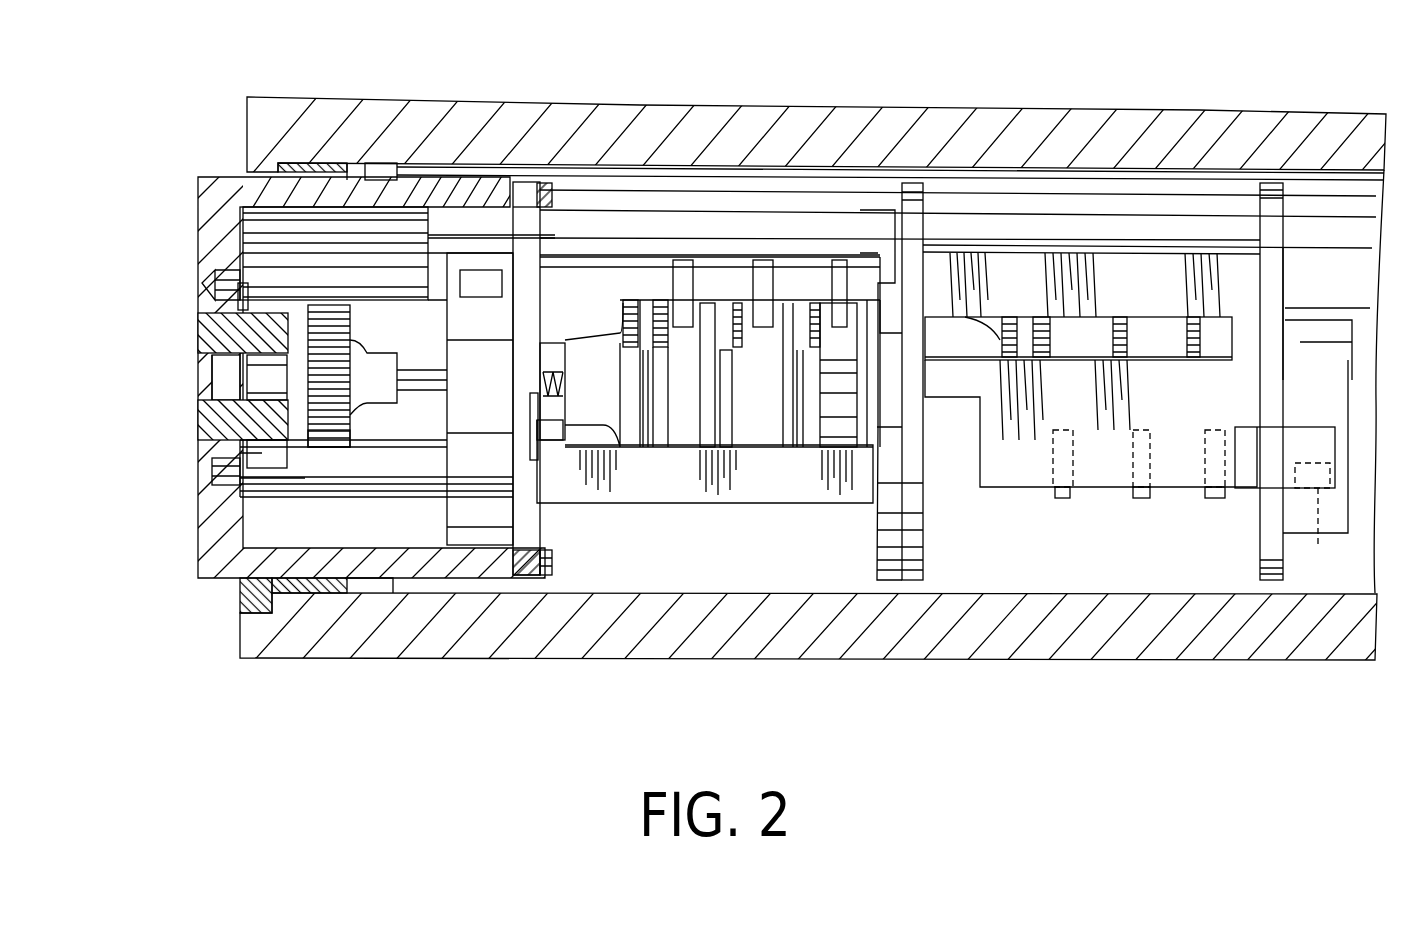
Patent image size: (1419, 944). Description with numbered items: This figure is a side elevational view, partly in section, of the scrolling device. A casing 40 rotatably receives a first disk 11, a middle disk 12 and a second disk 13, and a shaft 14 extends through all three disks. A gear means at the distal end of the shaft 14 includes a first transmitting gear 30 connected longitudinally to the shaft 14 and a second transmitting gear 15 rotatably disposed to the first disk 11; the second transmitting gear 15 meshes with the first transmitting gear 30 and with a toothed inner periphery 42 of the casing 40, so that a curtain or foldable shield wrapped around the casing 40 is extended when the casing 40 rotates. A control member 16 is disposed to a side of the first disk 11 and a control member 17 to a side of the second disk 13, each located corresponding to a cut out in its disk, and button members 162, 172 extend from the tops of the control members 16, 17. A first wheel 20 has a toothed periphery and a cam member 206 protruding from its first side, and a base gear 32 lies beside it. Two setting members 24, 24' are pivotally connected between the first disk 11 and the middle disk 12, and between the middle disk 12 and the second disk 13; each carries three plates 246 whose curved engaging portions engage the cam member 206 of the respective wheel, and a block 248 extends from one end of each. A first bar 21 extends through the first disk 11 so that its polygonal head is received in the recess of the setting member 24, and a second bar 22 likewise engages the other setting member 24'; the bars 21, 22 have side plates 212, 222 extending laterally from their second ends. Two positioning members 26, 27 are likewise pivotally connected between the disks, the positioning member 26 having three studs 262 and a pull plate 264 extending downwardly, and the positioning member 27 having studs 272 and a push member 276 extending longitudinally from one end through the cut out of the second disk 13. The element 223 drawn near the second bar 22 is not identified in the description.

The first disk 11 is at (515, 555).
The middle disk 12 is at (900, 568).
The second disk 13 is at (1268, 573).
The shaft 14 is at (433, 373).
The second transmitting gear 15 is at (338, 443).
The control member 16 is at (439, 295).
The button member 162 is at (480, 280).
The control member 17 is at (1337, 367).
The button member 172 is at (1312, 537).
The first wheel 20 is at (795, 465).
The cam member 206 is at (725, 345).
The first bar 21 is at (483, 540).
The second bar 22 is at (380, 262).
The side plate 222 is at (255, 300).
The bore 223 is at (572, 217).
The side plate 212 is at (260, 453).
The setting member 24 is at (719, 415).
The setting member 24' is at (1147, 141).
The plate 246 is at (720, 433).
The block 248 is at (540, 428).
The positioning member 26 is at (638, 275).
The stud 262 is at (767, 267).
The pull plate 264 is at (535, 395).
The positioning member 27 is at (1190, 470).
The stud 272 is at (1063, 497).
The push member 276 is at (1327, 495).
The first transmitting gear 30 is at (333, 420).
The base gear 32 is at (628, 440).
The casing 40 is at (315, 110).
The toothed inner periphery 42 is at (318, 173).